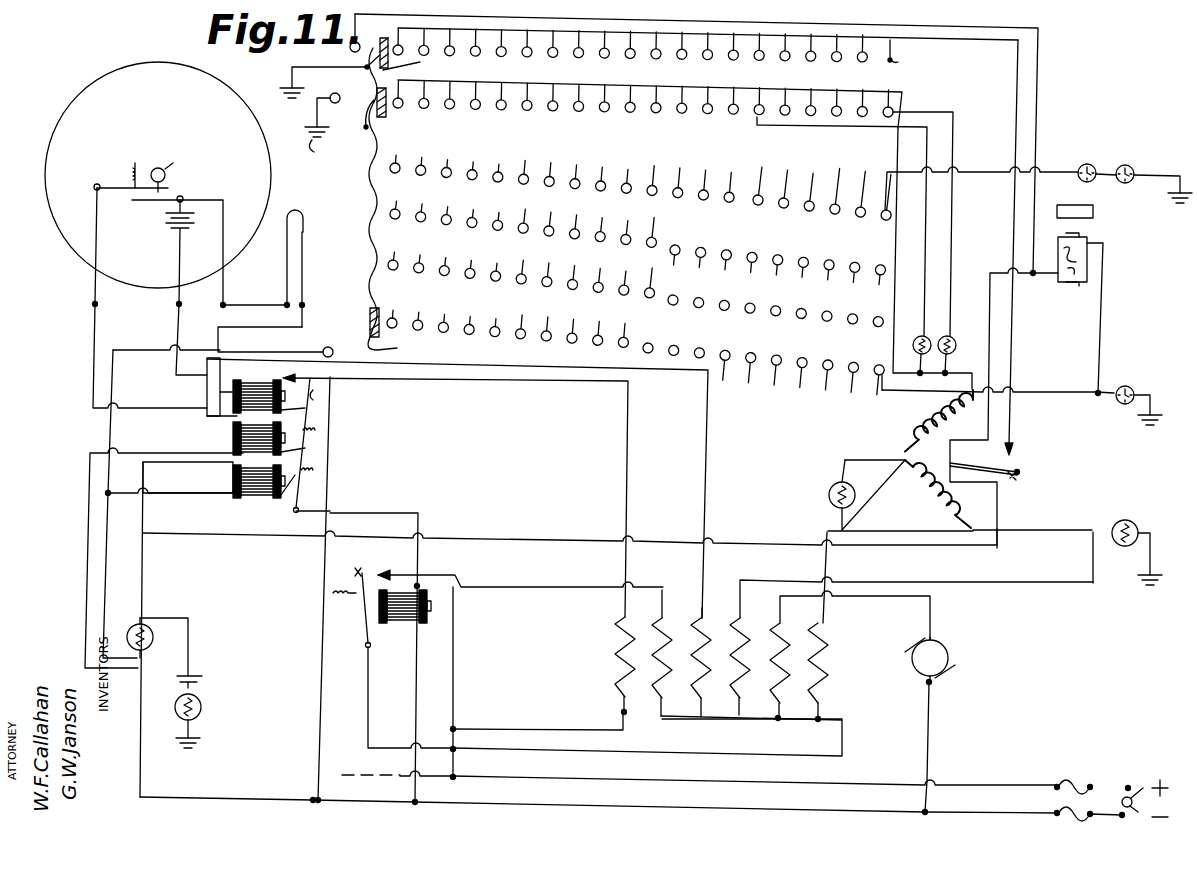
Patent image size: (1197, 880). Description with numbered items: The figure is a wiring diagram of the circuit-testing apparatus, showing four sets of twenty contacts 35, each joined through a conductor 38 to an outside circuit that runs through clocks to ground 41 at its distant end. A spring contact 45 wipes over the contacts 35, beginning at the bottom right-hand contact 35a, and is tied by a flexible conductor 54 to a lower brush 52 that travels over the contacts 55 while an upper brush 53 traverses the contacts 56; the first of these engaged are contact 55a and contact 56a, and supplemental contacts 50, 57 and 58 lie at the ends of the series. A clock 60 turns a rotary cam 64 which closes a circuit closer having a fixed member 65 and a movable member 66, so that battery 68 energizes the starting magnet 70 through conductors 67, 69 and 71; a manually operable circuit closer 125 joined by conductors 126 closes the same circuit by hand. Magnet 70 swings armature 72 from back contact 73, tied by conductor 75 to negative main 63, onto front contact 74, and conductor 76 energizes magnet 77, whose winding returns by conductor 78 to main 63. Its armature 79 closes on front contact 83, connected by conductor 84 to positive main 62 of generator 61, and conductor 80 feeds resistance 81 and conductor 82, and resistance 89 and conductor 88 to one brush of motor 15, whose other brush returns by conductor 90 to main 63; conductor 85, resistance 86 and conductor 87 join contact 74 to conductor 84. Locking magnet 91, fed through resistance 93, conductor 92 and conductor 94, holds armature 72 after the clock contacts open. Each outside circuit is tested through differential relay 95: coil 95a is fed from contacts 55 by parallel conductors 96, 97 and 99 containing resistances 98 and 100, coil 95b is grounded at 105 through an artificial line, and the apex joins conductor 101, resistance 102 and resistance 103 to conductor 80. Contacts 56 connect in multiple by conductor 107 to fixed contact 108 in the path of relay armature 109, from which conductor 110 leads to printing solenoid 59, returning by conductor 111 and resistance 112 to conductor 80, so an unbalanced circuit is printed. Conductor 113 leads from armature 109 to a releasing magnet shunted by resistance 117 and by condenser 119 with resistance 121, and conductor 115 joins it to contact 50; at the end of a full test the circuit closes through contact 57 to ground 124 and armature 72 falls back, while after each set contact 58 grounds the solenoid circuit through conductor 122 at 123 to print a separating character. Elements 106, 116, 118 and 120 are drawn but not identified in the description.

The motor 15 is at (950, 655).
The contacts 35 is at (676, 345).
The bottom right hand contact 35a is at (878, 364).
The conductors 38 is at (1073, 164).
The ground 41 is at (1172, 198).
The spring contact 45 is at (394, 334).
The supplemental contact 50 is at (330, 347).
The lower contact 52 is at (383, 118).
The upper contact 53 is at (405, 56).
The flexible conductor 54 is at (368, 194).
The contacts 55 is at (492, 120).
The contact 55a is at (897, 106).
The contacts 56 is at (476, 55).
The contact 56a is at (912, 51).
The supplemental contact 57 is at (330, 110).
The supplemental contact 58 is at (336, 37).
The printing solenoid 59 is at (1090, 284).
The clock 60 is at (48, 225).
The generator 61 is at (1130, 786).
The positive main 62 is at (1014, 790).
The negative main 63 is at (1014, 810).
The rotary cam member 64 is at (165, 169).
The fixed member 65 is at (148, 200).
The movable member 66 is at (110, 186).
The conductor 67 is at (198, 200).
The battery 68 is at (170, 228).
The conductor 69 is at (176, 323).
The starting magnet 70 is at (305, 420).
The conductor 71 is at (91, 330).
The conductor armature 72 is at (312, 468).
The fixed back contact 73 is at (320, 398).
The front contact 74 is at (295, 380).
The conductor 75 is at (318, 570).
The conductor 76 is at (400, 512).
The magnet 77 is at (391, 620).
The conductor 78 is at (416, 690).
The conductive armature 79 is at (360, 632).
The conductor 80 is at (368, 746).
The resistance 81 is at (635, 664).
The conductor 82 is at (518, 600).
The front contact 83 is at (377, 560).
The conductor 84 is at (457, 573).
The conductor 85 is at (590, 382).
The resistance 86 is at (616, 641).
The conductor 87 is at (520, 730).
The conductor 88 is at (897, 598).
The resistance 89 is at (790, 638).
The conductor 90 is at (928, 718).
The locking magnet 91 is at (312, 440).
The conductor 92 is at (708, 458).
The resistance 93 is at (664, 682).
The conductor 94 is at (158, 453).
The test differential relay 95 is at (875, 443).
The relay coil 95a is at (935, 421).
The relay coil 95b is at (938, 495).
The conductor 96 is at (893, 243).
The conductor 97 is at (927, 217).
The resistance 98 is at (956, 348).
The conductor 99 is at (953, 250).
The resistance 100 is at (930, 360).
The conductor 101 is at (881, 466).
The resistance 102 is at (829, 495).
The resistance 103 is at (826, 676).
The ground 105 is at (1150, 588).
The lamp 106 is at (1070, 526).
The conductor 107 is at (1014, 82).
The fixed contact 108 is at (1017, 455).
The armature 109 is at (1020, 476).
The conductor 110 is at (990, 330).
The conductor 111 is at (1100, 320).
The resistance 112 is at (751, 675).
The conductor 113 is at (890, 548).
The conductor 115 is at (113, 380).
The conductor 116 is at (142, 590).
The resistance 117 is at (152, 648).
The conductor 118 is at (188, 628).
The condenser 119 is at (214, 666).
The ground 120 is at (195, 752).
The resistance 121 is at (200, 712).
The conductor 122 is at (1040, 82).
The ground 123 is at (272, 76).
The ground 124 is at (310, 148).
The manually operable circuit closer 125 is at (304, 228).
The conductors 126 is at (252, 308).